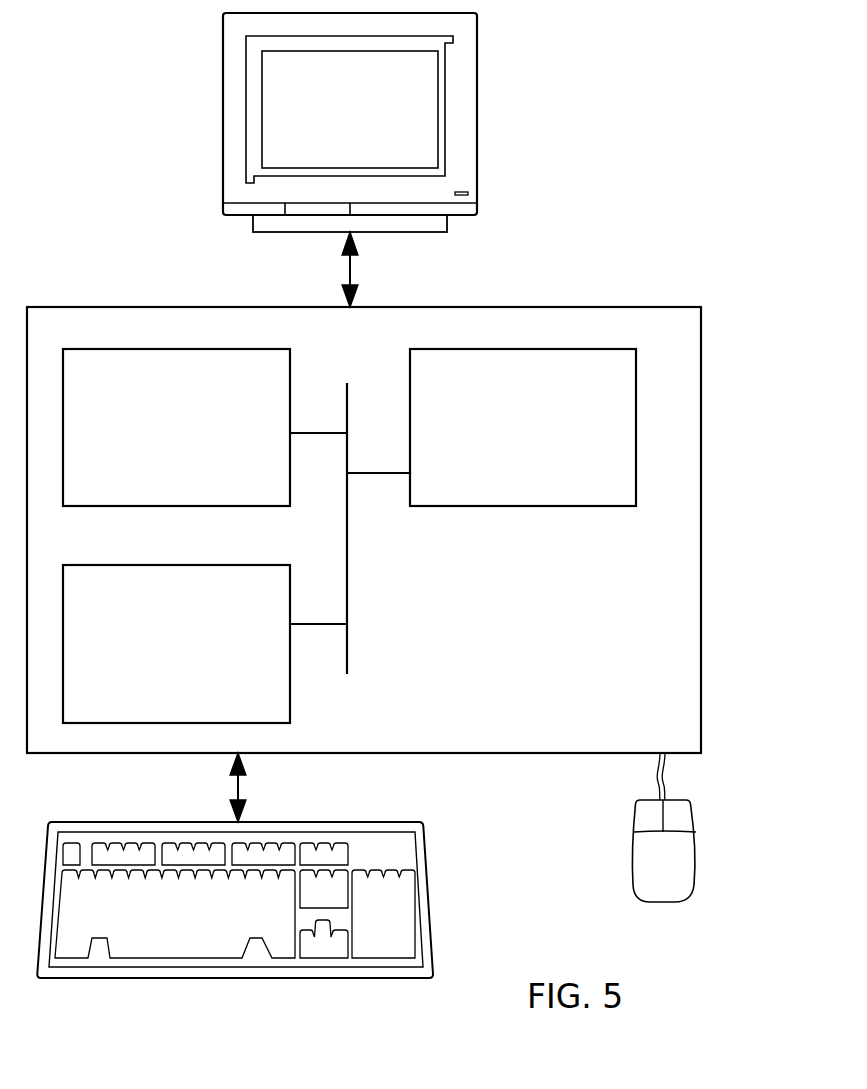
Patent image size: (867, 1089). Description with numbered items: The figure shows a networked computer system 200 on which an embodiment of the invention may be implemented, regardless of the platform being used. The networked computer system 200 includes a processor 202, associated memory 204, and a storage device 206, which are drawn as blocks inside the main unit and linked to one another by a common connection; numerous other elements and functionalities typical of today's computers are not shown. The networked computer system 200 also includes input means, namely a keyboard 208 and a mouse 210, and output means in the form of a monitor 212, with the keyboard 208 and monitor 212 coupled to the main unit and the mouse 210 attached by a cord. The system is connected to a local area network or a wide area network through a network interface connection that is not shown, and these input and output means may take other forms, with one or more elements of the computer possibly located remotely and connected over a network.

The networked computer system 200 is at (725, 162).
The processor 202 is at (519, 438).
The memory 204 is at (157, 438).
The storage device 206 is at (153, 656).
The keyboard 208 is at (147, 936).
The mouse 210 is at (642, 872).
The monitor 212 is at (329, 126).